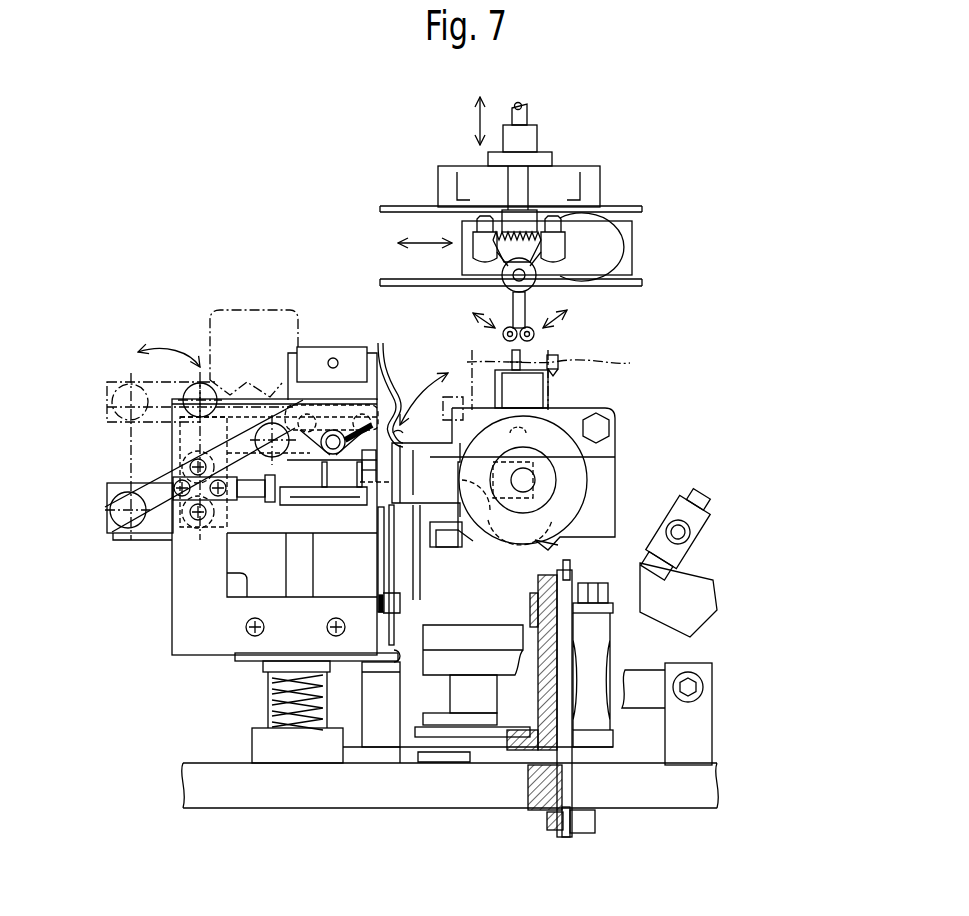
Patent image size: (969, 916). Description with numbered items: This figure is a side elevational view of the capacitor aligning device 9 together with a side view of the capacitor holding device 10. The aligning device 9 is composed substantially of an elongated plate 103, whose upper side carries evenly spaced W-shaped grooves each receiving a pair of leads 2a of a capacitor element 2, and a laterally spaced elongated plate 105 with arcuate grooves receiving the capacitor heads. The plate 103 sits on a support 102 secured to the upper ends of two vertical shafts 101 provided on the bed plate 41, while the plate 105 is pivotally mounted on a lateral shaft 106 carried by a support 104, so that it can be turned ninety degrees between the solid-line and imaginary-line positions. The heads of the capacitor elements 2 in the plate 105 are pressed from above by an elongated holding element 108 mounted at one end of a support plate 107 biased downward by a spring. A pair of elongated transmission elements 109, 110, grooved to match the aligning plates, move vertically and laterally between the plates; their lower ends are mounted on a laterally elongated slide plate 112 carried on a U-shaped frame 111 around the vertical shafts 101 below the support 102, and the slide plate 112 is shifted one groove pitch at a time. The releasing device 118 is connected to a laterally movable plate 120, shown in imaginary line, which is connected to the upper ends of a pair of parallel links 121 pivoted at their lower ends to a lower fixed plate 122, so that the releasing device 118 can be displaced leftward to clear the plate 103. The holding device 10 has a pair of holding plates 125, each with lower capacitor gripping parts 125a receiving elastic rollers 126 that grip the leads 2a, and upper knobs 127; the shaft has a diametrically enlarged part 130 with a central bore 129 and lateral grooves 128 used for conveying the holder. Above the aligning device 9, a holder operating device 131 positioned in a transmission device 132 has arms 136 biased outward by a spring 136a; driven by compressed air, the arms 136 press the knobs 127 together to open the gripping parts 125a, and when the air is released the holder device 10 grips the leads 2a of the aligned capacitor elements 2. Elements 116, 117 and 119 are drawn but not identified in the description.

The capacitor element 2 is at (403, 546).
The leads 2a is at (473, 349).
The capacitor aligning device 9 is at (400, 352).
The holding device 10 is at (570, 310).
The bed plate 41 is at (208, 763).
The vertical shaft 101 is at (270, 697).
The support 102 is at (318, 545).
The elongated plate 103 is at (368, 486).
The support 104 is at (617, 457).
The elongated plate 105 is at (500, 337).
The shaft 106 is at (620, 462).
The support plate 107 is at (707, 408).
The holding element 108 is at (548, 378).
The transmission element 109 is at (378, 590).
The transmission element 110 is at (400, 600).
The U-shaped frame 111 is at (172, 623).
The slide plate 112 is at (233, 573).
The swing lever 116 is at (213, 332).
The tension spring 117 is at (395, 380).
The releasing device 118 is at (378, 352).
The block 119 is at (313, 348).
The laterally movable plate 120 is at (110, 394).
The links 121 is at (145, 470).
The lower fixed plate 122 is at (113, 535).
The holding plates 125 is at (503, 286).
The capacitor gripping part 125a is at (502, 337).
The elastic rollers 126 is at (507, 310).
The knobs 127 is at (477, 257).
The lateral grooves 128 is at (580, 285).
The central bore 129 is at (470, 245).
The diametrically enlarged part 130 is at (512, 313).
The holder operating device 131 is at (505, 206).
The transmission device 132 is at (565, 162).
The arms 136 is at (640, 228).
The spring 136a is at (537, 210).